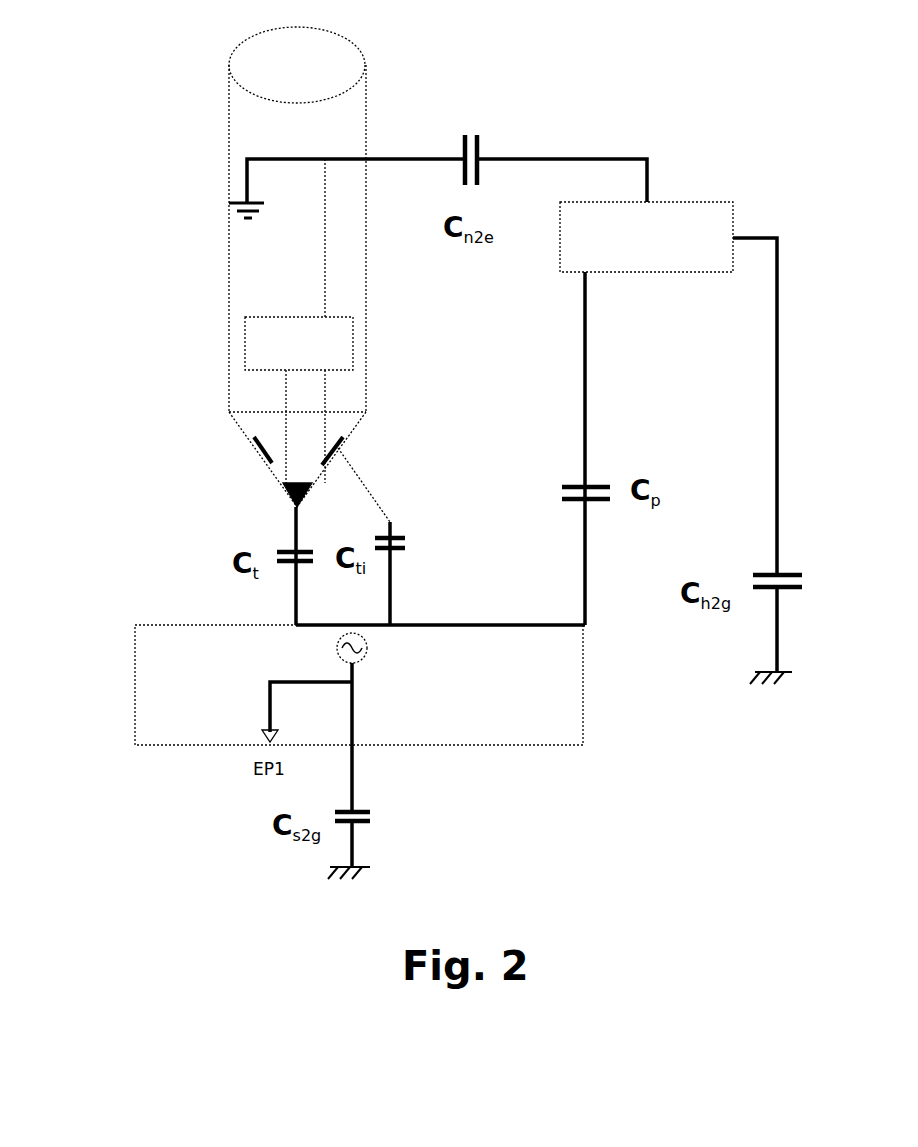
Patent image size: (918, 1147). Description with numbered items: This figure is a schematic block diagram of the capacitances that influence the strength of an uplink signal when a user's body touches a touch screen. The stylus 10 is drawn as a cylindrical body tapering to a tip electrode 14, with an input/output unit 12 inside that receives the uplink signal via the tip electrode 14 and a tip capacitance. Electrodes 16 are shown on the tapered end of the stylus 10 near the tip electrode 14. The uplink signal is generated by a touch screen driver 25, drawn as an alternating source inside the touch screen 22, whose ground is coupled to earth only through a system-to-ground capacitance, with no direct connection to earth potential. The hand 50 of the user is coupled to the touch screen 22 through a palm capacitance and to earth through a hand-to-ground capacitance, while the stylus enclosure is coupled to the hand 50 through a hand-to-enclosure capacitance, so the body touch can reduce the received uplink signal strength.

The stylus 10 is at (204, 267).
The input/output unit 12 is at (299, 343).
The tip electrode 14 is at (293, 498).
The side electrodes 16 is at (342, 445).
The touch screen 22 is at (359, 685).
The touch screen driver 25 is at (337, 648).
The hand 50 is at (646, 237).